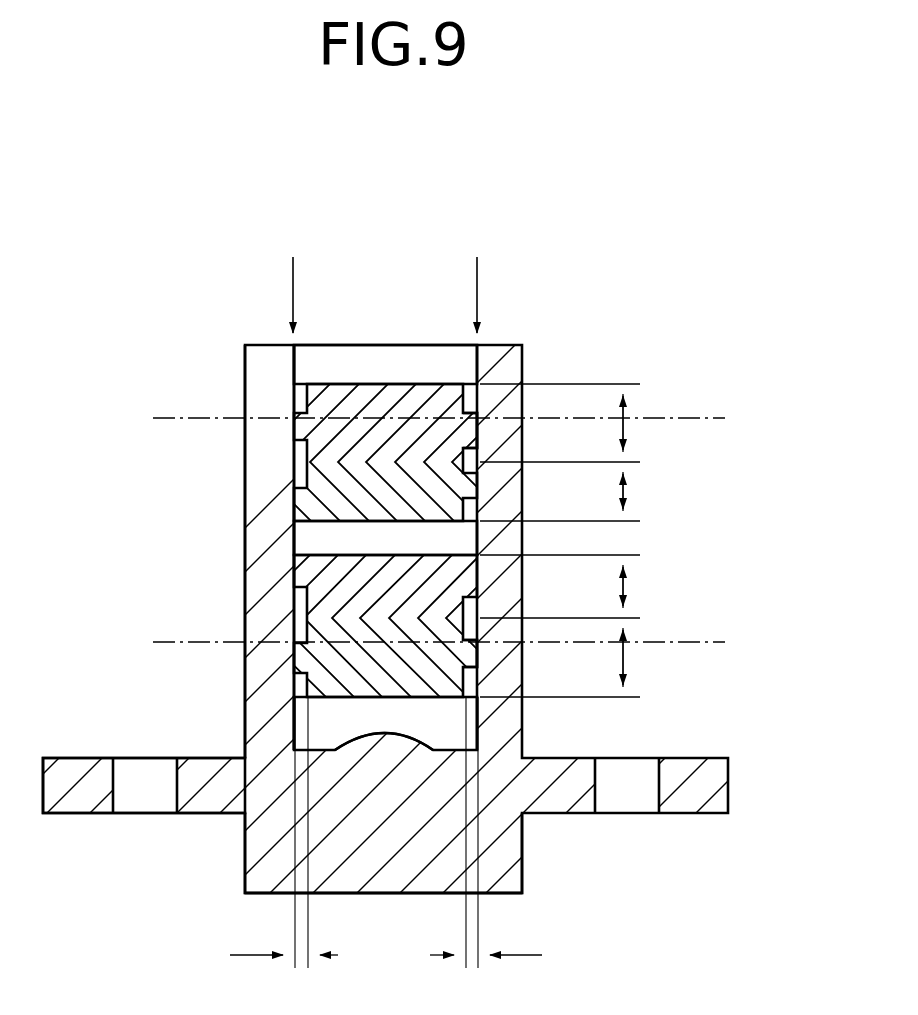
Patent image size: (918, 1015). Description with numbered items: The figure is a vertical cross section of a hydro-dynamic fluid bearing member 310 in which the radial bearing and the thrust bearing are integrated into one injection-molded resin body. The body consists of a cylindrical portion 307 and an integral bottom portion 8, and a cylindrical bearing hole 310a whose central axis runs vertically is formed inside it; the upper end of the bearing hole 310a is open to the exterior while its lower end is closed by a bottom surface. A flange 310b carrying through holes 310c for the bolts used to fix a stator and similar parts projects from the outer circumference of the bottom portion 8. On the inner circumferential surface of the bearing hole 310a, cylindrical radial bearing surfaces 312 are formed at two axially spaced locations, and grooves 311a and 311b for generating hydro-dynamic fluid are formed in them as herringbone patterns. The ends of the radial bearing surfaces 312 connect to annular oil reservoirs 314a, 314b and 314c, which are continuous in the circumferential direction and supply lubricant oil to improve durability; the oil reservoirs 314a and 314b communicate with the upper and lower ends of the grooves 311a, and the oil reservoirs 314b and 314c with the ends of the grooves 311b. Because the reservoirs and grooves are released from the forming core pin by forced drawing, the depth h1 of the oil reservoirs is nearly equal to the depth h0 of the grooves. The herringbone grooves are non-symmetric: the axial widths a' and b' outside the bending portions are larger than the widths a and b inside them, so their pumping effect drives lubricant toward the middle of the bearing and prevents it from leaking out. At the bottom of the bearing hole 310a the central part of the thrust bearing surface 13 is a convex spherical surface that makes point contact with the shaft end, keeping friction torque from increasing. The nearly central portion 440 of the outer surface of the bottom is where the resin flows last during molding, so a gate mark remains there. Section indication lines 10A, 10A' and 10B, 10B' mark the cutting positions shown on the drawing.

The hydro-dynamic fluid bearing member 310 is at (548, 849).
The bearing hole 310a is at (438, 407).
The flange 310b is at (62, 810).
The through holes 310c is at (145, 815).
The cylindrical portion 307 is at (258, 478).
The oil reservoir 314a is at (293, 372).
The oil reservoir 314b is at (300, 540).
The oil reservoir 314c is at (300, 722).
The radial bearing surfaces 312 is at (312, 455).
The grooves for generating hydro-dynamic fluid 311a is at (468, 432).
The grooves for generating hydro-dynamic fluid 311b is at (470, 657).
The projection 13 is at (423, 723).
The base portion 8 is at (342, 850).
The nearly central portion 440 is at (382, 893).
The section line 10A is at (441, 417).
The section line 10A' is at (441, 641).
The section line 10B is at (288, 276).
The section line 10B' is at (475, 276).
The axial width inside bending portion a is at (560, 496).
The axial width outside bending portion a' is at (560, 423).
The axial width inside bending portion b is at (560, 586).
The axial width outside bending portion b' is at (560, 662).
The depth of grooves h0 is at (284, 832).
The depth of oil reservoirs h1 is at (486, 832).